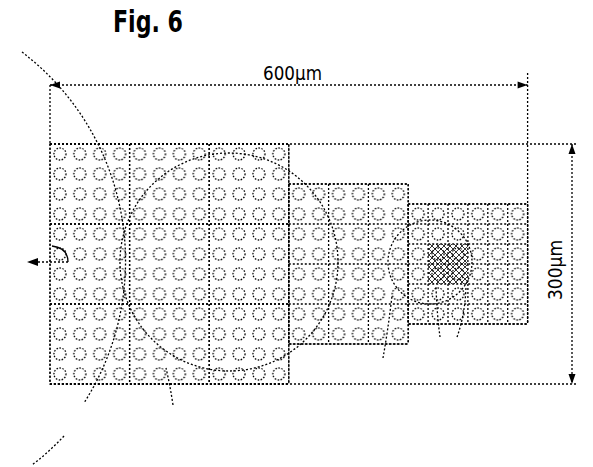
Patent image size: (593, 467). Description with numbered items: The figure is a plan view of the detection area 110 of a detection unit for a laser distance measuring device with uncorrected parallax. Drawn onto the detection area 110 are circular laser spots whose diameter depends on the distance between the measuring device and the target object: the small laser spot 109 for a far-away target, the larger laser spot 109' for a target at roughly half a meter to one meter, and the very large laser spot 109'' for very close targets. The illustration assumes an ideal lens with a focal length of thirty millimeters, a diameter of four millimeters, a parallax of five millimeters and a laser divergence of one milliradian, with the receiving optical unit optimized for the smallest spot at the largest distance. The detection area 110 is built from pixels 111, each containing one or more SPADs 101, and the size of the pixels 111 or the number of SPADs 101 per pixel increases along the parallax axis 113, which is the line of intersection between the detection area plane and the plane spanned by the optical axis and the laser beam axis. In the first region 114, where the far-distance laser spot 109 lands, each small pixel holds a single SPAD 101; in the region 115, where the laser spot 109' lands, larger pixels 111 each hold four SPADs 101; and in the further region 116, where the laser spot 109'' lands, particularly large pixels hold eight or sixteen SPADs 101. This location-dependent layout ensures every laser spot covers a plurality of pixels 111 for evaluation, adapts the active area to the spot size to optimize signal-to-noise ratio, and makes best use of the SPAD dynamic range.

The SPAD 101 is at (160, 152).
The laser spot 109 is at (421, 268).
The laser spot 109' is at (229, 262).
The laser spot 109'' is at (74, 249).
The detection area 110 is at (226, 406).
The pixel 111 is at (429, 188).
The parallax axis 113 is at (48, 246).
The first region 114 is at (496, 340).
The region 115 is at (333, 370).
The further region 116 is at (122, 406).